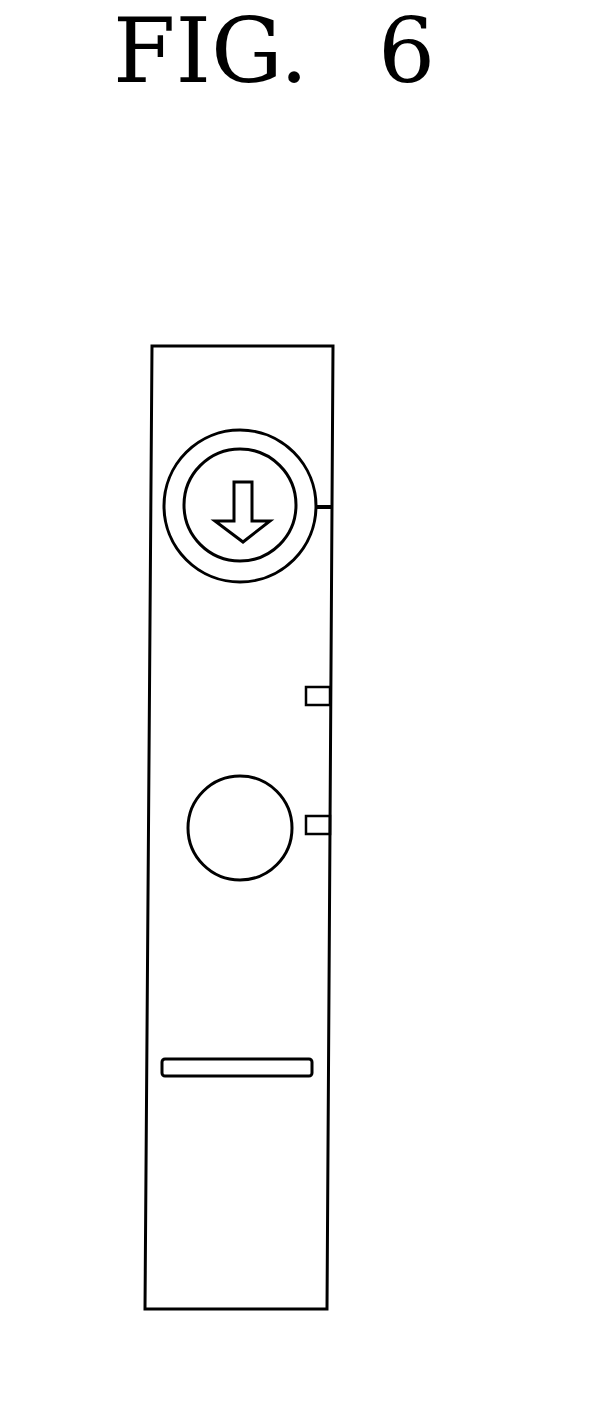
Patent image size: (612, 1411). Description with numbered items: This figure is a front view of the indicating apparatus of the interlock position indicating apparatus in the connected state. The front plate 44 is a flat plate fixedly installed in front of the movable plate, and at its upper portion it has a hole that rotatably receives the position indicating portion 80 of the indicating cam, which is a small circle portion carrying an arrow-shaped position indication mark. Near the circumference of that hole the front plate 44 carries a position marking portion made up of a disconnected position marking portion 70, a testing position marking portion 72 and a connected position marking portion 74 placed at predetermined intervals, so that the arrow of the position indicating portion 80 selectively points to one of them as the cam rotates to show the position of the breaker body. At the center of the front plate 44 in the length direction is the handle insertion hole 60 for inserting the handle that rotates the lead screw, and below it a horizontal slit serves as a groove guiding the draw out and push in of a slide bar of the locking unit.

The front plate 44 is at (270, 1192).
The handle insertion hole 60 is at (257, 852).
The disconnected position marking portion 70 is at (313, 538).
The testing position marking portion 72 is at (332, 507).
The connected position marking portion 74 is at (313, 473).
The position indicating portion 80 is at (240, 509).